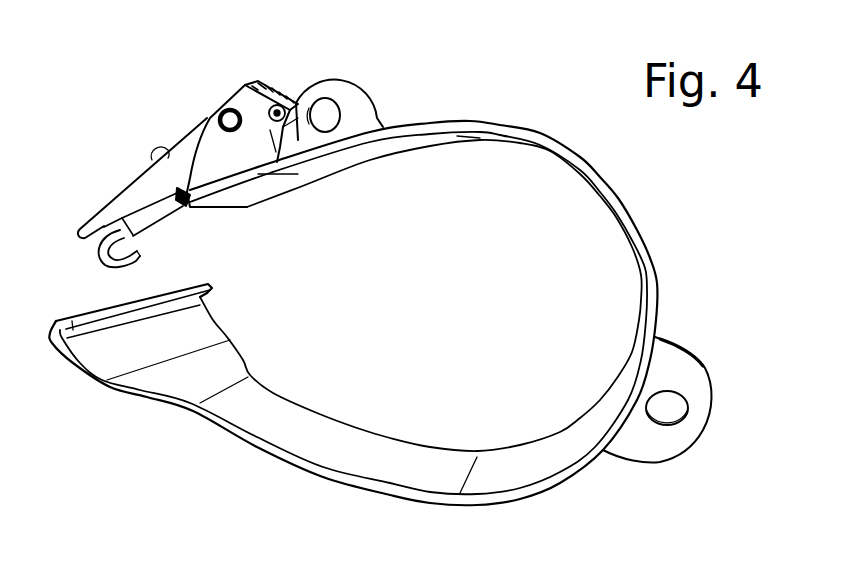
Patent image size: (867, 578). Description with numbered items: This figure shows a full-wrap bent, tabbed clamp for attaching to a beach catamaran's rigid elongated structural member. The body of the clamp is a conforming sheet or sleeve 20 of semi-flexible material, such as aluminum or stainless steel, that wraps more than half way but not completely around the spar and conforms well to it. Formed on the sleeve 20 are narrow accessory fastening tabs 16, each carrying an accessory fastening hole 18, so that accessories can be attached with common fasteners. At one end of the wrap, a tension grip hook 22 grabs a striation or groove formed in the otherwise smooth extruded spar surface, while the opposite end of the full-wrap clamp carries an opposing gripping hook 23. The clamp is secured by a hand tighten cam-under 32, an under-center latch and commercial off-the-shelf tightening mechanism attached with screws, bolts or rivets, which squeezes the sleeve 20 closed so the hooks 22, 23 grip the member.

The accessory fastening tabs 16 is at (357, 115).
The accessory fastening holes 18 is at (668, 413).
The conforming sheet or sleeve 20 is at (540, 440).
The tension grip hook 22 is at (142, 254).
The gripping hook 23 is at (212, 287).
The hand tighten cam-under 32 is at (197, 142).